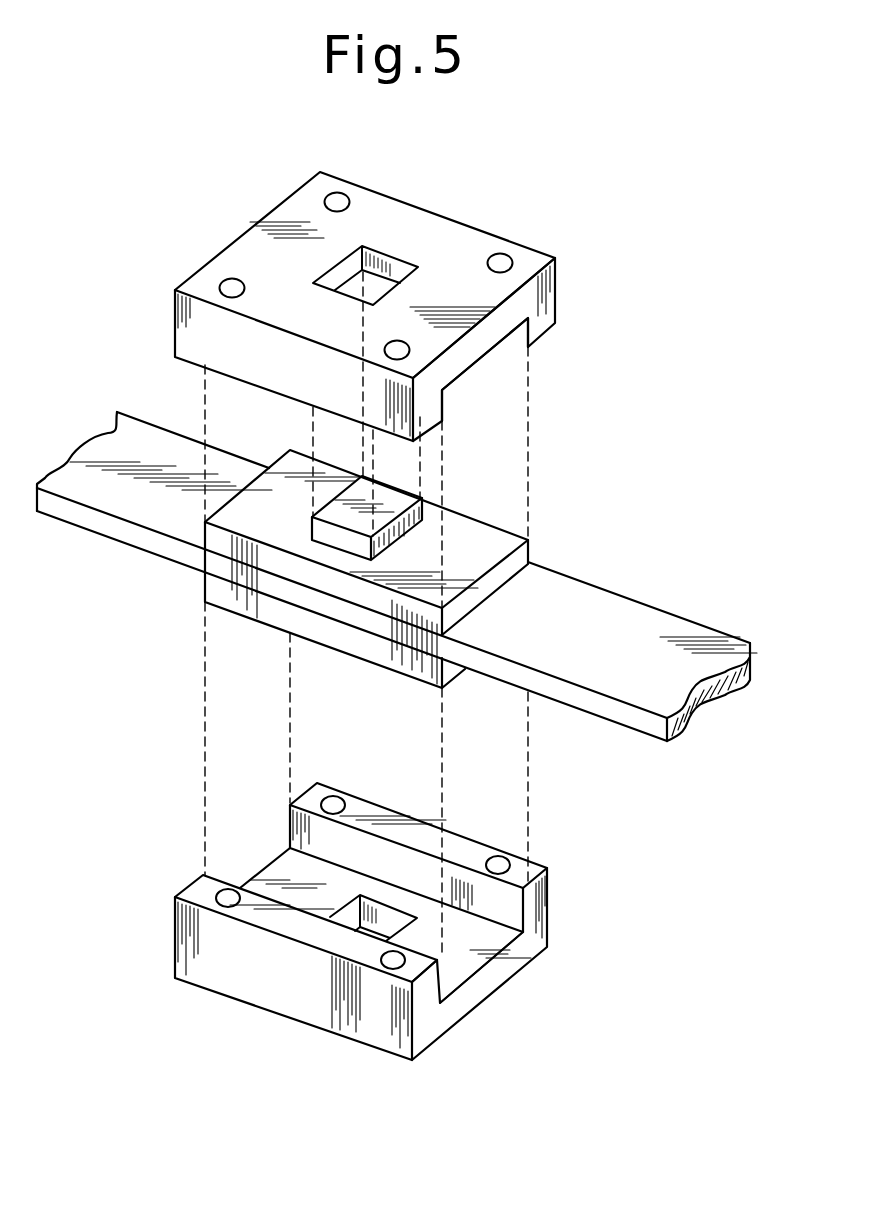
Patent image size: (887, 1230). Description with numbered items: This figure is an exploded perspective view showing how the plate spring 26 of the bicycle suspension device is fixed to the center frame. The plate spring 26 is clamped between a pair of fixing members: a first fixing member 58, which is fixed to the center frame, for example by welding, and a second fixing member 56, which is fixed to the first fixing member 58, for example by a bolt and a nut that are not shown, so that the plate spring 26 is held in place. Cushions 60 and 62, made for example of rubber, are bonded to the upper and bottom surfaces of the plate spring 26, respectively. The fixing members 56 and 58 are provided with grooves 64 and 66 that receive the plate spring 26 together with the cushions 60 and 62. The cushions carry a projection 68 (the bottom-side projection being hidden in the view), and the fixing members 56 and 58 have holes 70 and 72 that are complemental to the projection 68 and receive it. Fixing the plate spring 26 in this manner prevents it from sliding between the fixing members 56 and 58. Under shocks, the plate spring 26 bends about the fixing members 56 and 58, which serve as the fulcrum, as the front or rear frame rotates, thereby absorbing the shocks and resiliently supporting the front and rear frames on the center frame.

The plate spring 26 is at (702, 635).
The second fixing member 56 is at (487, 244).
The first fixing member 58 is at (457, 1007).
The cushion 60 is at (517, 560).
The cushion 62 is at (212, 590).
The groove 64 is at (507, 336).
The groove 66 is at (510, 952).
The projection 68 is at (405, 518).
The hole 70 is at (392, 260).
The hole 72 is at (347, 913).